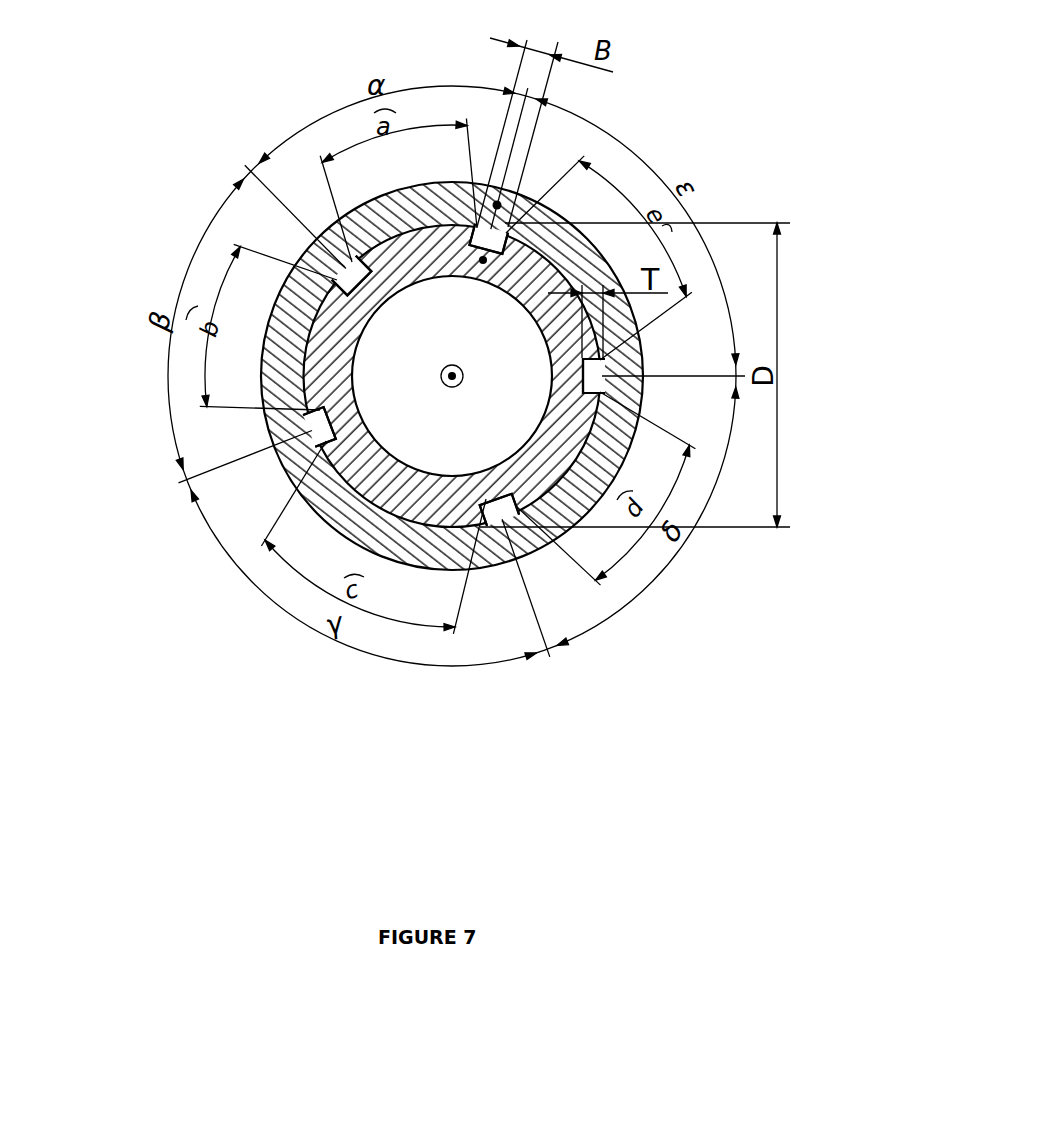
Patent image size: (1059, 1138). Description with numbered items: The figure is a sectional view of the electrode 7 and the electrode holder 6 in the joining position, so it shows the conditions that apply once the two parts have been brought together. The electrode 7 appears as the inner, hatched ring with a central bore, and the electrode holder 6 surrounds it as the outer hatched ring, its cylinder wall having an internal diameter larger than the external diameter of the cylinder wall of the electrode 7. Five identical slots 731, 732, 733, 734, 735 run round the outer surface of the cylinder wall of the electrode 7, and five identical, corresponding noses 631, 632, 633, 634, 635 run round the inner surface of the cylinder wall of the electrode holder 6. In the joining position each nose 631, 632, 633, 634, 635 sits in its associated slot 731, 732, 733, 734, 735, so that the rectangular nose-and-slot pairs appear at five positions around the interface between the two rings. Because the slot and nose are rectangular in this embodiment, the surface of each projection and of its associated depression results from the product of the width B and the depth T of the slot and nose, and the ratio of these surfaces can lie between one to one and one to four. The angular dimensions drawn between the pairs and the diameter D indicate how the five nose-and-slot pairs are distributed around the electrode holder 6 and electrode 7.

The electrode holder 6 is at (462, 213).
The electrode 7 is at (427, 240).
The nose 631 is at (600, 372).
The nose 632 is at (503, 512).
The nose 633 is at (317, 423).
The nose 634 is at (345, 268).
The nose 635 is at (497, 243).
The slot 731 is at (600, 378).
The slot 732 is at (503, 516).
The slot 733 is at (317, 428).
The slot 734 is at (345, 262).
The slot 735 is at (497, 237).